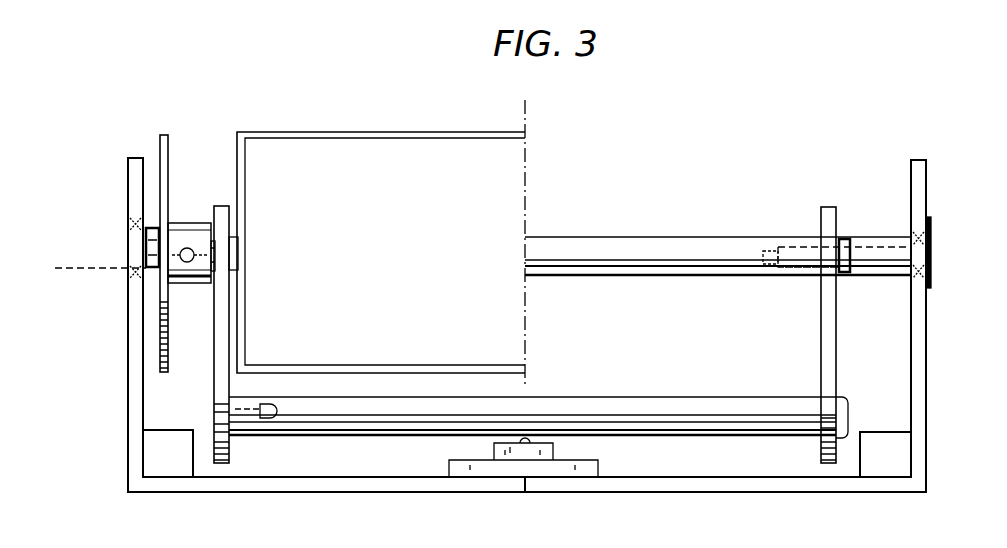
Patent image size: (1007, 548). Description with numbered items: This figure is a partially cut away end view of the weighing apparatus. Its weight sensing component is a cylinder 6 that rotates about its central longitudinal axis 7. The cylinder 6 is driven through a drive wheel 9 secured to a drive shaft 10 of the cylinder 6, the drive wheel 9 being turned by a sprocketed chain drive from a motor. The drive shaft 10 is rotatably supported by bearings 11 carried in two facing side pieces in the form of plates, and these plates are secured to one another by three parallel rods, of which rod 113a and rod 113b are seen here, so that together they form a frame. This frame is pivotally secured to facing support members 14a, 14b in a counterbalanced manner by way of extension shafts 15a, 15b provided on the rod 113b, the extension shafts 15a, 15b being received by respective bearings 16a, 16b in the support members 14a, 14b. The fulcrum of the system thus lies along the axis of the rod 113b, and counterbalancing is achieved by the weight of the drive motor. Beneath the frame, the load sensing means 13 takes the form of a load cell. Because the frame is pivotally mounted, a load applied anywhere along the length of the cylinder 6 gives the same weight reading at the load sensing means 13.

The cylinder 6 is at (378, 150).
The central longitudinal axis 7 is at (86, 276).
The drive wheel 9 is at (170, 157).
The drive shaft 10 is at (660, 243).
The bearing 11 is at (239, 262).
The load sensing means 13 is at (508, 466).
The support member 14a is at (921, 340).
The support member 14b is at (133, 416).
The extension shaft 15a is at (886, 255).
The extension shaft 15b is at (148, 243).
The bearing 16a is at (929, 233).
The bearing 16b is at (128, 281).
The parallel rod 113a is at (752, 431).
The parallel rod 113b is at (737, 249).